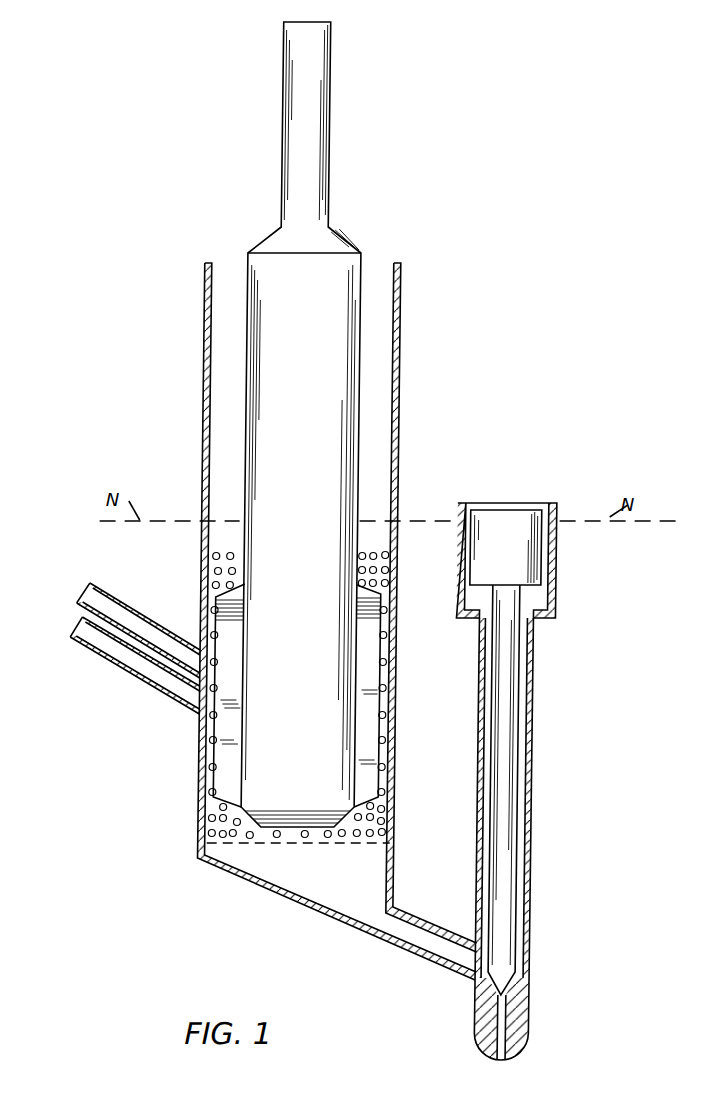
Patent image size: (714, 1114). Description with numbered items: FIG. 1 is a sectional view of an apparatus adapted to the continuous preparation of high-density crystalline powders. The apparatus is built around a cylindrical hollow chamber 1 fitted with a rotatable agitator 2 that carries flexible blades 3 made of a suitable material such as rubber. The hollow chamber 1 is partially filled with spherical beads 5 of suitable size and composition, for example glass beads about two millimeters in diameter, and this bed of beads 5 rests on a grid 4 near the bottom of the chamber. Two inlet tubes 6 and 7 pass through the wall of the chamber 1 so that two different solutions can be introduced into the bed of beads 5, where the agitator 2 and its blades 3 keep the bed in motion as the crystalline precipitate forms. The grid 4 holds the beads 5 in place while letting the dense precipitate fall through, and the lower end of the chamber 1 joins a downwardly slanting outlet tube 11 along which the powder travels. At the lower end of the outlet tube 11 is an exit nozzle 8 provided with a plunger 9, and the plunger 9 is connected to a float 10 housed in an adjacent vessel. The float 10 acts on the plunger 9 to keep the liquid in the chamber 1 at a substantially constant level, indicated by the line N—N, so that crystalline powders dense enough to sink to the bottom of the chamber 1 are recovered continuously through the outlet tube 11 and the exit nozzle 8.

The cylindrical hollow chamber 1 is at (404, 301).
The rotatable agitator 2 is at (320, 129).
The flexible blades 3 is at (380, 668).
The grid 4 is at (249, 843).
The spherical beads 5 is at (220, 557).
The inlet tube 6 is at (97, 587).
The inlet tube 7 is at (85, 632).
The exit nozzle 8 is at (514, 1022).
The plunger 9 is at (510, 983).
The float 10 is at (548, 566).
The outlet tube 11 is at (404, 946).